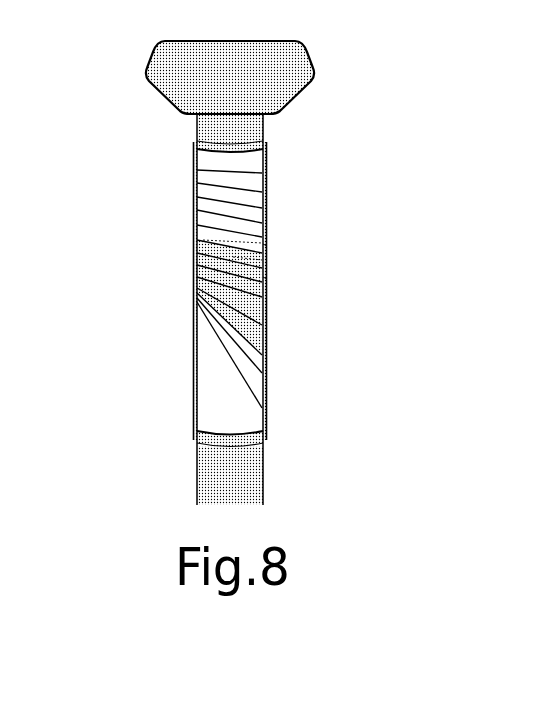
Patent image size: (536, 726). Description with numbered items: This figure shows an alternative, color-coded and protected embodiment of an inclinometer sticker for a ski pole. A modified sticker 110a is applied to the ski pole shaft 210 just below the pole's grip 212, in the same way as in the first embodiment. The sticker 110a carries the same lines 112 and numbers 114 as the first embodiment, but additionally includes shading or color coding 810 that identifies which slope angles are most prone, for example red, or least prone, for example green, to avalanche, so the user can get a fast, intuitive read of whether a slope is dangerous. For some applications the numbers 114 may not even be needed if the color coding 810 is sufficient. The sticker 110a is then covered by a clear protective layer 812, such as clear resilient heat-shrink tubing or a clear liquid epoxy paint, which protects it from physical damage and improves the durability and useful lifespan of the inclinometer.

The grip 212 is at (288, 92).
The ski pole shaft 210 is at (197, 130).
The modified sticker 110a is at (208, 403).
The clear protective layer 812 is at (267, 420).
The shading or color coding 810 is at (267, 322).
The lines 112 is at (197, 241).
The numbers 114 is at (267, 278).